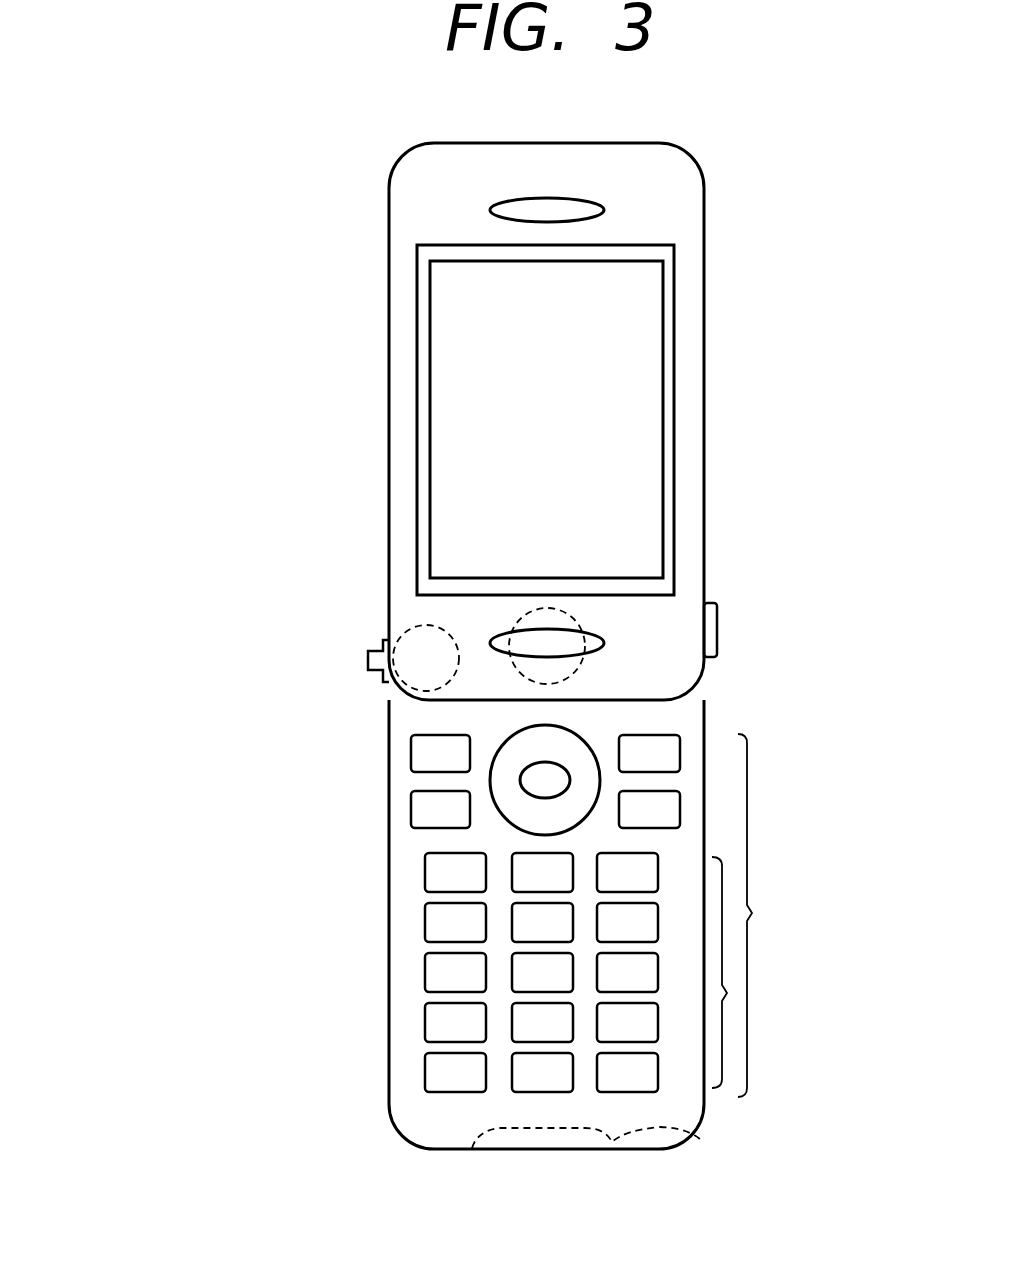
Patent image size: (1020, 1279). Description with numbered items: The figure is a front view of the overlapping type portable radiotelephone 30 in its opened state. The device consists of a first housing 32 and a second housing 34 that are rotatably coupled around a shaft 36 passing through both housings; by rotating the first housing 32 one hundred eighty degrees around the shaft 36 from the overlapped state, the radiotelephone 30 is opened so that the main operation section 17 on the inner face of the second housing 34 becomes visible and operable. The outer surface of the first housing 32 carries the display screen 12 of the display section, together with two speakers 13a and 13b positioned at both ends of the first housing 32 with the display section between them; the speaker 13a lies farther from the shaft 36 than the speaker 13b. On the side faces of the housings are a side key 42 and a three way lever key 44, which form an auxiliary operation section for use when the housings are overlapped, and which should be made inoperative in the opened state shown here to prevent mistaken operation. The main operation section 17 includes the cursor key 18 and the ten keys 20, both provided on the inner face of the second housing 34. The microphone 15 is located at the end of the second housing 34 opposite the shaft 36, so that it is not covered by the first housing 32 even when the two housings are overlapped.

The overlapping type portable radiotelephone 30 is at (192, 926).
The first housing 32 is at (406, 342).
The second housing 34 is at (397, 977).
The display screen 12 is at (630, 415).
The speaker 13a is at (585, 207).
The speaker 13b is at (600, 643).
The shaft 36 is at (527, 610).
The three way lever key 44 is at (368, 661).
The side key 42 is at (708, 630).
The cursor key 18 is at (548, 772).
The main operation section 17 is at (603, 915).
The ten keys 20 is at (727, 993).
The microphone 15 is at (703, 1140).